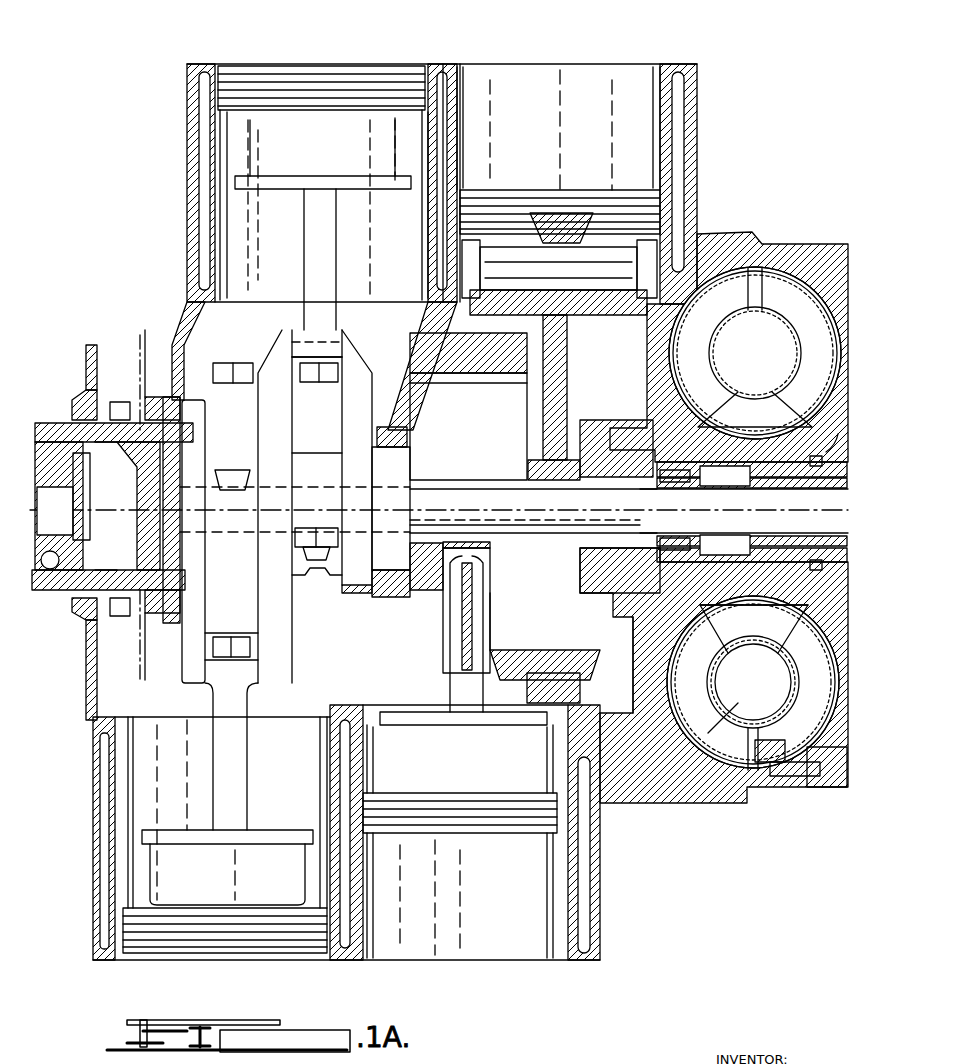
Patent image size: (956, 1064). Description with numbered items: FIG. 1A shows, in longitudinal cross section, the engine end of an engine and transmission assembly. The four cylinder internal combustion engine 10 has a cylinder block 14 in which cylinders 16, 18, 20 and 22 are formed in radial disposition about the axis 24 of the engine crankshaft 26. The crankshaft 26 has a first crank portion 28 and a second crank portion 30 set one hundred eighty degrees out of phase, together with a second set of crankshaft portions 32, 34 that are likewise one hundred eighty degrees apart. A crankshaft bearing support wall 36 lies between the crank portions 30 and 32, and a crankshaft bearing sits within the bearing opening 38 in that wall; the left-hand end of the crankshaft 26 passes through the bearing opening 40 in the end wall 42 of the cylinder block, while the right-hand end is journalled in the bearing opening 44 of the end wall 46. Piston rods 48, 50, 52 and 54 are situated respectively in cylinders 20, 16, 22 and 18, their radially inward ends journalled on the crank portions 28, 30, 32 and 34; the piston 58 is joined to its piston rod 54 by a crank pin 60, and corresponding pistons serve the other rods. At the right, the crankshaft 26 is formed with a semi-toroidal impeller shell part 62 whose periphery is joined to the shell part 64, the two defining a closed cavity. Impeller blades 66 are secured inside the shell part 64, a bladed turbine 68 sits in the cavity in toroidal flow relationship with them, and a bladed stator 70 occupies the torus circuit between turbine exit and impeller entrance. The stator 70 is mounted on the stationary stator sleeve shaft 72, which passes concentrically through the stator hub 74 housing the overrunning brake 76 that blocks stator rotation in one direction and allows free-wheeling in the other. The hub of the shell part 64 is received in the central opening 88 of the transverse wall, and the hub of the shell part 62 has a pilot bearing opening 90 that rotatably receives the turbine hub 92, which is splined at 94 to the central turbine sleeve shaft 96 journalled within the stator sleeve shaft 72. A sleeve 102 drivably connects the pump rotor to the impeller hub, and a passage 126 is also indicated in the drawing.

The four cylinder internal combustion engine 10 is at (702, 120).
The cylinder block 14 is at (422, 92).
The cylinder 16 is at (226, 78).
The cylinder 18 is at (470, 96).
The cylinder 20 is at (225, 815).
The cylinder 22 is at (380, 752).
The axis 24 is at (460, 488).
The engine crankshaft 26 is at (362, 330).
The first crank portion 28 is at (280, 655).
The second crank portion 30 is at (268, 370).
The crankshaft portion 32 is at (525, 368).
The crankshaft portion 34 is at (573, 693).
The crankshaft bearing support wall 36 is at (380, 620).
The bearing opening 38 is at (440, 440).
The bearing opening 40 is at (195, 412).
The end wall 42 is at (172, 342).
The bearing opening 44 is at (620, 570).
The end wall 46 is at (630, 620).
The piston rod 48 is at (240, 765).
The piston rod 50 is at (318, 228).
The piston rod 52 is at (445, 676).
The piston rod 54 is at (568, 334).
The piston 58 is at (500, 196).
The crank pin 60 is at (606, 262).
The impeller shell part 62 is at (753, 683).
The shell part 64 is at (818, 762).
The impeller blades 66 is at (790, 765).
The bladed turbine 68 is at (700, 668).
The bladed stator 70 is at (755, 517).
The stationary stator sleeve shaft 72 is at (752, 512).
The hub 74 is at (755, 353).
The overrunning brake 76 is at (731, 510).
The central opening 88 is at (844, 431).
The pilot bearing opening 90 is at (616, 448).
The turbine hub 92 is at (688, 510).
The spline 94 is at (654, 511).
The central turbine sleeve shaft 96 is at (827, 556).
The sleeve 102 is at (754, 614).
The oil passage 126 is at (550, 522).